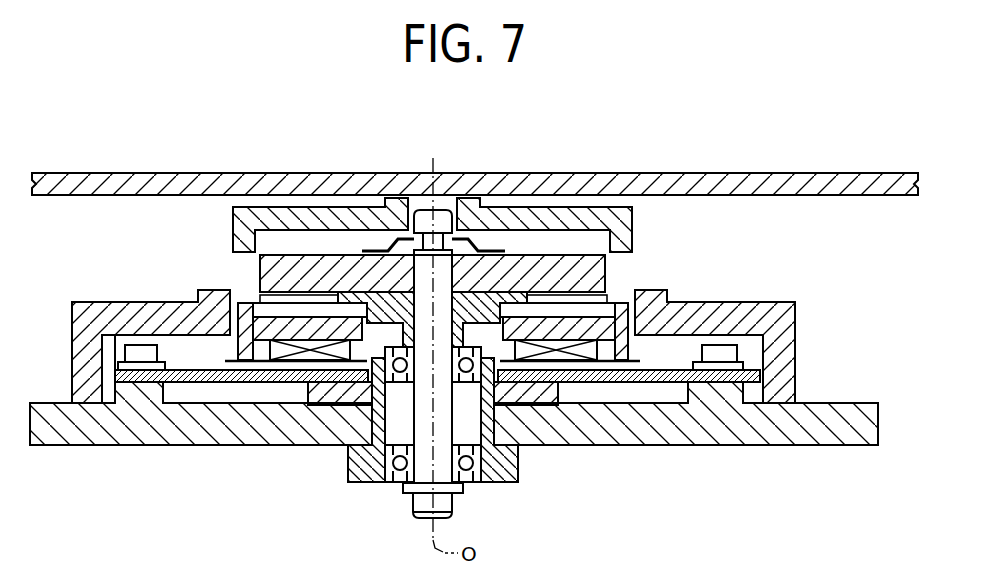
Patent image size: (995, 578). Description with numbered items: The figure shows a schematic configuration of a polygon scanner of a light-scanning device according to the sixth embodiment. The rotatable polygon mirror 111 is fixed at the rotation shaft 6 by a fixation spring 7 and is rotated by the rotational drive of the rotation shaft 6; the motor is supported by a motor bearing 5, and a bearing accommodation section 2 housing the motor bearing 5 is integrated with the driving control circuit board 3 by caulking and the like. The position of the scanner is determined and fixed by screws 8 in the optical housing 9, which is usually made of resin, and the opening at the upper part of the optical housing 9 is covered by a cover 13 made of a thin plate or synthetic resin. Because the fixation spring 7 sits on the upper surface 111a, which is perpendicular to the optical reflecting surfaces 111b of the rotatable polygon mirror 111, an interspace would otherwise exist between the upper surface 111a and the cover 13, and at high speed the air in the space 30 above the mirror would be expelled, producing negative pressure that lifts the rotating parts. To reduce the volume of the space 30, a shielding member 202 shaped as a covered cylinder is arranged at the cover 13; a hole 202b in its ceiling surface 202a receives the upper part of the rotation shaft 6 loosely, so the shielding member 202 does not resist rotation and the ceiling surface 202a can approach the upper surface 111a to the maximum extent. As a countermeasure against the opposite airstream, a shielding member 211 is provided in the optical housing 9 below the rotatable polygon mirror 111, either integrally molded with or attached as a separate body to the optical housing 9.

The bearing accommodation section 2 is at (525, 398).
The driving control circuit board 3 is at (715, 377).
The motor bearing 5 is at (392, 430).
The rotation shaft 6 is at (417, 497).
The fixation spring 7 is at (402, 247).
The screw 8 is at (133, 345).
The optical housing 9 is at (833, 444).
The cover 13 is at (680, 173).
The space 30 is at (587, 237).
The rotatable polygon mirror 111 is at (428, 234).
The upper surface 111a is at (542, 253).
The optical reflecting surfaces 111b is at (260, 274).
The shielding member 202 is at (489, 187).
The ceiling surface 202a is at (290, 214).
The hole 202b is at (446, 197).
The shielding member 211 is at (72, 371).